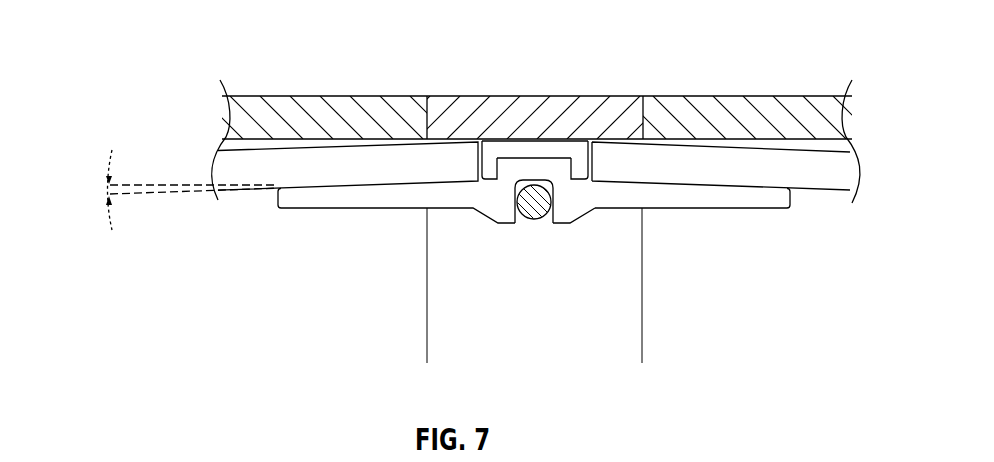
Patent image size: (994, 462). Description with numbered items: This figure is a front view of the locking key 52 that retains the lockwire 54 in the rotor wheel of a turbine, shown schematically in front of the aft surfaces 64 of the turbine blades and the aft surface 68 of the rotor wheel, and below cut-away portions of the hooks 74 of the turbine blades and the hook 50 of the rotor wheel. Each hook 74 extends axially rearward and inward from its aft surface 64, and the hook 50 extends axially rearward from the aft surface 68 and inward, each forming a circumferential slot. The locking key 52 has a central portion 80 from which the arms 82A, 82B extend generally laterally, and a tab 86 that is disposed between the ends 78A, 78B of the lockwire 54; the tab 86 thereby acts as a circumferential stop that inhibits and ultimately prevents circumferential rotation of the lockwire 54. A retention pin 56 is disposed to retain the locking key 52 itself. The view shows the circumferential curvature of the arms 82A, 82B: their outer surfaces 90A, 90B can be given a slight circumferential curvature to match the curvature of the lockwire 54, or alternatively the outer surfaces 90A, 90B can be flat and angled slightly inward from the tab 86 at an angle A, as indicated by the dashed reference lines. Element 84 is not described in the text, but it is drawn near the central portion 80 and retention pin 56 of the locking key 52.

The hook 50 is at (540, 99).
The locking key 52 is at (534, 261).
The lockwire 54 is at (750, 120).
The retention pin 56 is at (537, 208).
The aft surface 64 is at (534, 234).
The aft surface 68 is at (472, 278).
The hook 74 is at (320, 100).
The end 78A is at (486, 161).
The end 78B is at (583, 162).
The central portion 80 is at (563, 192).
The arm 82A is at (402, 200).
The arm 82B is at (687, 198).
The seal housing 84 is at (518, 220).
The tab 86 is at (548, 162).
The outer surface 90A is at (400, 183).
The outer surface 90B is at (693, 185).
The angle A is at (107, 190).